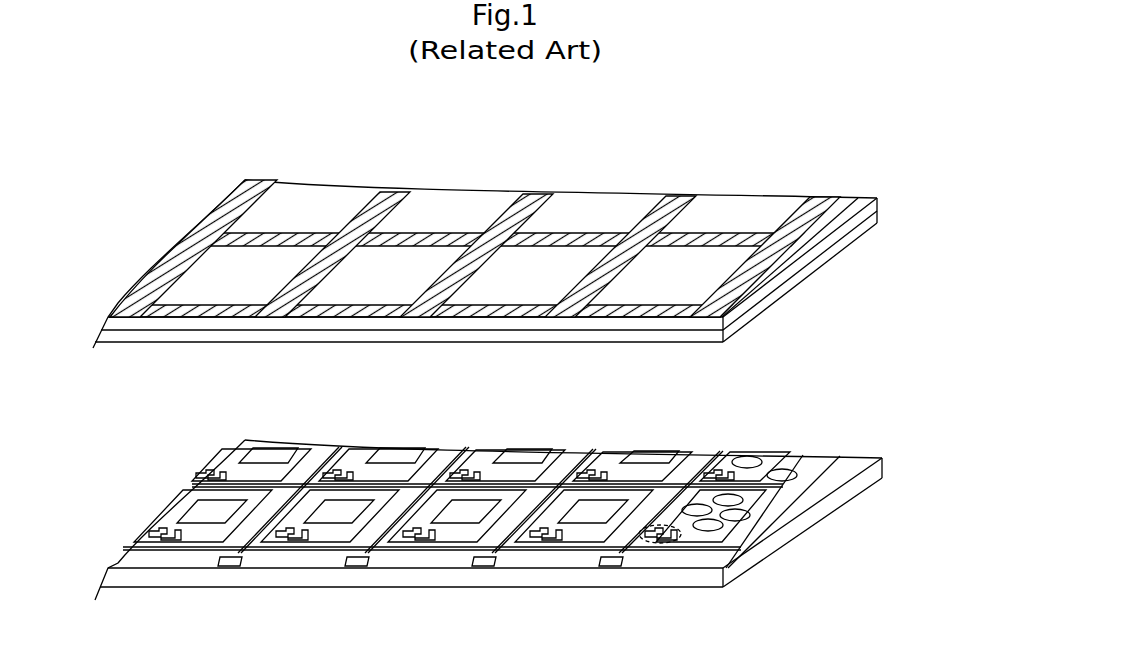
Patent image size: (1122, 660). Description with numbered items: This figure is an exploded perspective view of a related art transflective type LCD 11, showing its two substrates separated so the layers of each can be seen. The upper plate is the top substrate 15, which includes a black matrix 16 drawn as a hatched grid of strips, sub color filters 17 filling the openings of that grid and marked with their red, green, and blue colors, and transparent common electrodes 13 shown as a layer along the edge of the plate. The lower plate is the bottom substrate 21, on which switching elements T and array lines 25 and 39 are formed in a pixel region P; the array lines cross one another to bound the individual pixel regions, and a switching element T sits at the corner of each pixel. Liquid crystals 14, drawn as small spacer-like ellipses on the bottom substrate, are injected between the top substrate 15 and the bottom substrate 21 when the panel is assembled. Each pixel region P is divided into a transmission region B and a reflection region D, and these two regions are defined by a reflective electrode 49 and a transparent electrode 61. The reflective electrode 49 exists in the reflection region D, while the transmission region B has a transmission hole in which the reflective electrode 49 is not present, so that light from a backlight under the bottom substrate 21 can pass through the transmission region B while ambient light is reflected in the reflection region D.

The transflective type LCD 11 is at (882, 560).
The transparent common electrodes 13 is at (813, 252).
The liquid crystals 14 is at (782, 469).
The top substrate 15 is at (773, 275).
The black matrix 16 is at (825, 198).
The sub color filters 17 is at (723, 197).
The bottom substrate 21 is at (772, 537).
The array line 25 is at (745, 555).
The array line 39 is at (482, 567).
The reflective electrode 49 is at (413, 545).
The transparent electrode 61 is at (570, 543).
The pixel region P is at (845, 465).
The reflection region D is at (775, 493).
The transmission region B is at (770, 508).
The switching elements T is at (650, 553).